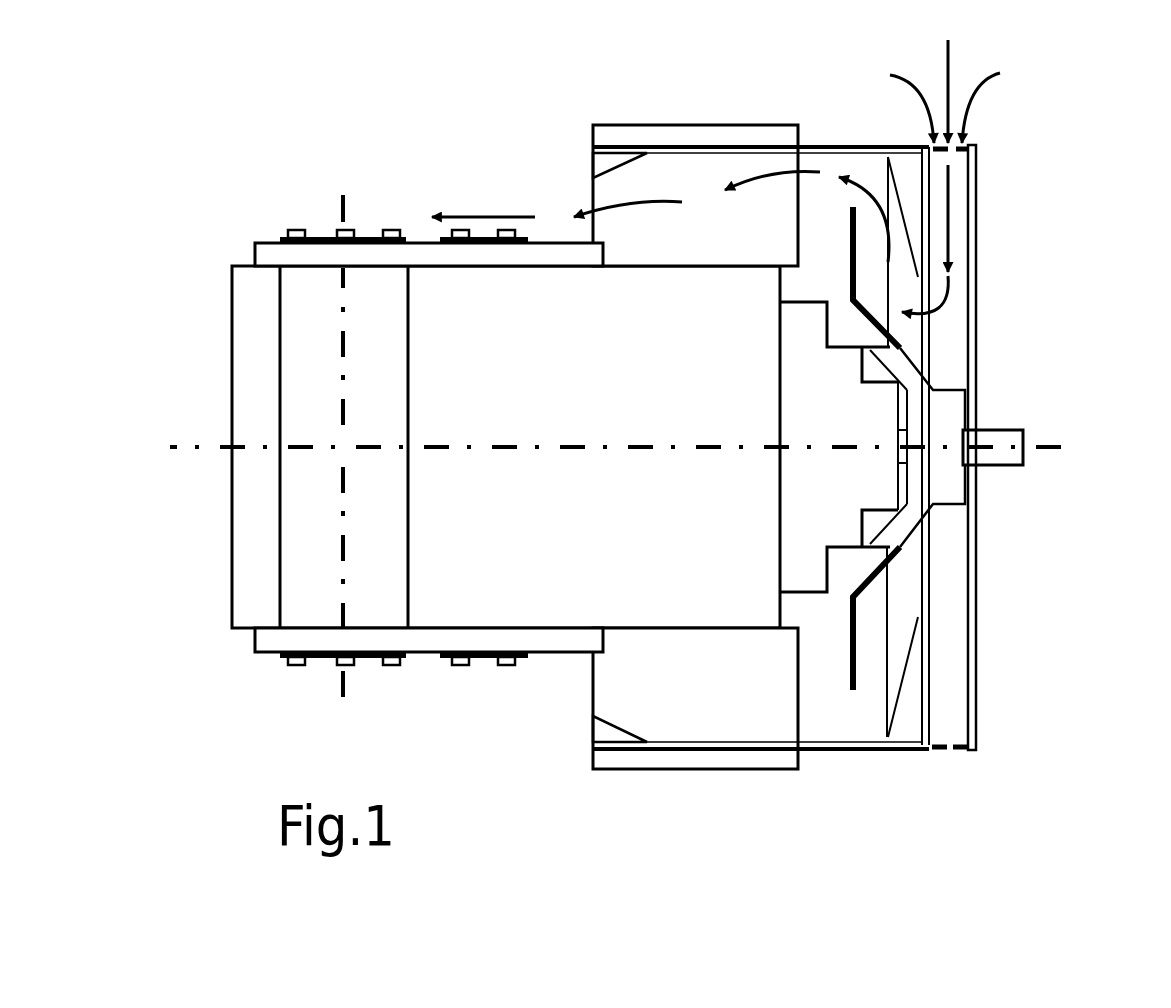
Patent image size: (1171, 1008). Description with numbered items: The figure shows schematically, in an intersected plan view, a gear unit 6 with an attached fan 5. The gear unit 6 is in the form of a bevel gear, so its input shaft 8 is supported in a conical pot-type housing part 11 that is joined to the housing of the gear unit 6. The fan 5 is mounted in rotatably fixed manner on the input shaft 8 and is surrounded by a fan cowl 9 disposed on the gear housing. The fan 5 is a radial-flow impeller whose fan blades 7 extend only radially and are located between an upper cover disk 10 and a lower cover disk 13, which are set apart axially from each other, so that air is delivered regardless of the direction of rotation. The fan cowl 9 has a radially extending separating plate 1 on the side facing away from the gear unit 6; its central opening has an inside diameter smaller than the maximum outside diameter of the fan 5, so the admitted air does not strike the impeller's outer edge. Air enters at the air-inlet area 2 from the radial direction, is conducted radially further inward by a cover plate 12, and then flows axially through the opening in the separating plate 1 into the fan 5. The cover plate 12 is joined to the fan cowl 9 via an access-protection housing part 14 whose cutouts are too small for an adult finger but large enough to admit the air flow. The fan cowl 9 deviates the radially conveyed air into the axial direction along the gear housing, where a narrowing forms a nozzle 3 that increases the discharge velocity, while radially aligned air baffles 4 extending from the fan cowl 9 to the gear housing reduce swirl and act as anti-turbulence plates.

The separating plate 1 is at (925, 680).
The air-inlet area 2 is at (1022, 135).
The nozzle 3 is at (613, 164).
The air baffle 4 is at (763, 210).
The fan 5 is at (909, 544).
The gear unit 6 is at (695, 447).
The fan blade 7 is at (863, 321).
The input shaft 8 is at (1007, 441).
The fan cowl 9 is at (833, 738).
The upper cover disk 10 is at (893, 723).
The conical pot-type housing part 11 is at (802, 542).
The cover plate 12 is at (973, 181).
The lower cover disk 13 is at (857, 610).
The access-protection housing part 14 is at (950, 754).